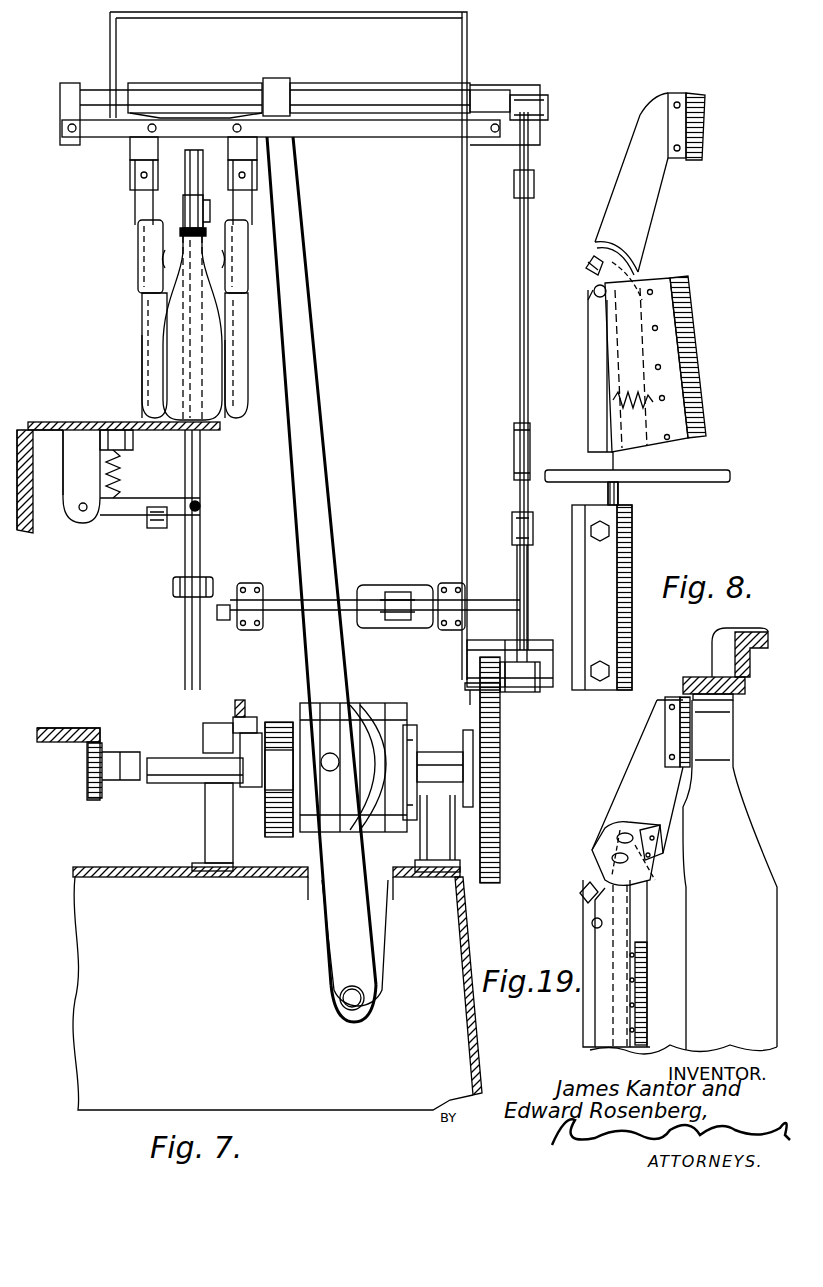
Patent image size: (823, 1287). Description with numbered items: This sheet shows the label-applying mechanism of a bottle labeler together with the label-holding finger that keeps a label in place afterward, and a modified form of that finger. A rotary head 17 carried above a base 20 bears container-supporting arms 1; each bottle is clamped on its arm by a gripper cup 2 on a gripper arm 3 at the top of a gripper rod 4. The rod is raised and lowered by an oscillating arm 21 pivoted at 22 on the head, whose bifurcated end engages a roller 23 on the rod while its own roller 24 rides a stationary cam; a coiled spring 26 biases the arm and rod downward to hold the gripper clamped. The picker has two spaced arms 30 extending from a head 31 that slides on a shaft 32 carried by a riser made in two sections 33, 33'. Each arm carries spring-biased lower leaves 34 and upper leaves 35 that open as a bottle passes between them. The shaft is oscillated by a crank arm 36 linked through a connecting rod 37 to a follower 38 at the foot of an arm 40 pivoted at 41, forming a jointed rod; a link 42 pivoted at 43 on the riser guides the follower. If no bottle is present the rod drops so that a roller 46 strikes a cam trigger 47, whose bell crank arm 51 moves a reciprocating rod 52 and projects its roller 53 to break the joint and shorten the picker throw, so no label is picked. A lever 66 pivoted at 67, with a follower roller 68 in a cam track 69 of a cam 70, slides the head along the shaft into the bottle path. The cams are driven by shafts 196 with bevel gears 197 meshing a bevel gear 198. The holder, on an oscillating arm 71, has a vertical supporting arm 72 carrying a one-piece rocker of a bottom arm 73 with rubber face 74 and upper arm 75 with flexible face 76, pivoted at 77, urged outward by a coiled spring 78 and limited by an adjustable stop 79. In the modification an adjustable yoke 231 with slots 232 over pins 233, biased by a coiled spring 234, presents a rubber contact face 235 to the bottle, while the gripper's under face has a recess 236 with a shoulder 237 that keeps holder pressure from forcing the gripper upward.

In FIG. 7, the container-supporting arm 1 is at (105, 425).
In FIG. 8, the container-supporting arm 1 is at (685, 482).
In FIG. 7, the gripper cup 2 is at (180, 233).
In FIG. 19, the gripper cup 2 is at (688, 677).
In FIG. 7, the gripper arm 3 is at (190, 210).
In FIG. 7, the gripper rod 4 is at (188, 548).
In FIG. 7, the rotary head 17 is at (30, 533).
In FIG. 7, the base 20 is at (150, 870).
In FIG. 7, the oscillating arm 21 is at (125, 515).
In FIG. 7, the pivot 22 is at (83, 512).
In FIG. 7, the roller 23 is at (200, 506).
In FIG. 7, the roller 24 is at (152, 528).
In FIG. 7, the coiled spring 26 is at (120, 480).
In FIG. 7, the picker arm 30 is at (142, 338).
In FIG. 7, the head 31 is at (212, 85).
In FIG. 7, the shaft 32 is at (368, 92).
In FIG. 7, the supporting riser 33 is at (306, 346).
In FIG. 7, the riser upper section 33' is at (475, 37).
In FIG. 7, the lower leaf 34 is at (150, 318).
In FIG. 7, the upper leaf 35 is at (146, 262).
In FIG. 7, the crank arm 36 is at (548, 108).
In FIG. 7, the connecting rod 37 is at (518, 290).
In FIG. 7, the follower 38 is at (498, 690).
In FIG. 7, the arm 40 is at (527, 578).
In FIG. 7, the pivot 41 is at (512, 530).
In FIG. 7, the link 42 is at (535, 655).
In FIG. 7, the pivot 43 is at (548, 680).
In FIG. 7, the roller 46 is at (175, 590).
In FIG. 7, the cam trigger 47 is at (222, 620).
In FIG. 7, the bell crank arm 51 is at (395, 592).
In FIG. 7, the reciprocating rod 52 is at (348, 598).
In FIG. 7, the roller 53 is at (515, 610).
In FIG. 7, the lever 66 is at (310, 375).
In FIG. 7, the pivot 67 is at (345, 998).
In FIG. 7, the follower roller 68 is at (330, 755).
In FIG. 7, the cam track 69 is at (385, 708).
In FIG. 7, the cam 70 is at (375, 835).
In FIG. 8, the oscillating arm 71 is at (632, 625).
In FIG. 8, the supporting arm 72 is at (588, 345).
In FIG. 19, the supporting arm 72 is at (583, 1018).
In FIG. 8, the bottom label holder arm 73 is at (625, 362).
In FIG. 19, the bottom label holder arm 73 is at (600, 1042).
In FIG. 8, the rubber face 74 is at (692, 392).
In FIG. 19, the rubber face 74 is at (650, 958).
In FIG. 8, the upper label holding arm 75 is at (630, 182).
In FIG. 19, the upper label holding arm 75 is at (630, 772).
In FIG. 8, the rubber face 76 is at (702, 122).
In FIG. 8, the pivot 77 is at (594, 294).
In FIG. 19, the pivot 77 is at (592, 925).
In FIG. 8, the coiled spring 78 is at (612, 404).
In FIG. 8, the adjustable stop 79 is at (586, 266).
In FIG. 19, the adjustable stop 79 is at (589, 892).
In FIG. 7, the shaft 196 is at (183, 758).
In FIG. 7, the bevel gear 197 is at (90, 798).
In FIG. 7, the bevel gear 198 is at (67, 764).
In FIG. 19, the adjustable yoke 231 is at (650, 840).
In FIG. 19, the slot 232 is at (617, 838).
In FIG. 19, the pin 233 is at (612, 858).
In FIG. 19, the coiled spring 234 is at (671, 862).
In FIG. 19, the rubber contact face 235 is at (665, 850).
In FIG. 19, the recess 236 is at (722, 640).
In FIG. 19, the shoulder 237 is at (745, 686).